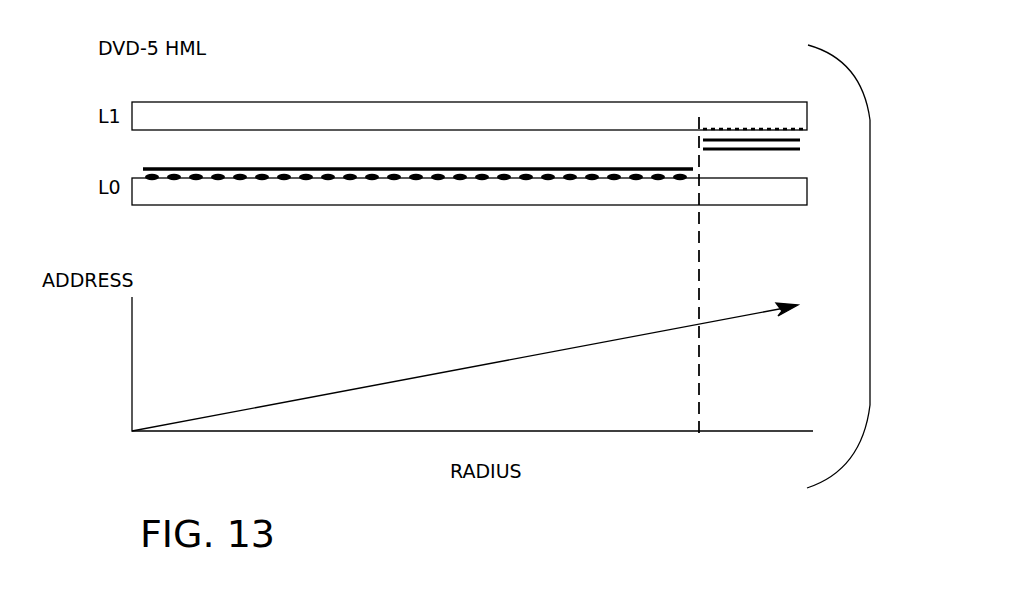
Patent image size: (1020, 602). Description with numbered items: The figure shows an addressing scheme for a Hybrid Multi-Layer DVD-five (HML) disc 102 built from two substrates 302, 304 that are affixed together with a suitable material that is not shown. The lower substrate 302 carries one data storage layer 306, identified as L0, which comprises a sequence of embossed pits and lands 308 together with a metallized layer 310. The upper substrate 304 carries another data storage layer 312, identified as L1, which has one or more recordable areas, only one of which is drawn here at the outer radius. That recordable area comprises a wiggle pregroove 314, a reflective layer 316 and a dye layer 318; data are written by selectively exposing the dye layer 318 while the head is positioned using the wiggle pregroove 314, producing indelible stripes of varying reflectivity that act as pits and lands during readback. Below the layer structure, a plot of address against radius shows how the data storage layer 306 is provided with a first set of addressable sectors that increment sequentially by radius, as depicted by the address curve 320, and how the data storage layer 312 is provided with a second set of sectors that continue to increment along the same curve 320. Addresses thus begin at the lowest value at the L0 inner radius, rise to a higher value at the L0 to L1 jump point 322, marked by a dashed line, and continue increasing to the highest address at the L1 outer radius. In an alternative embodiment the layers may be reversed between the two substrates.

The disc 102 is at (228, 32).
The substrate 302 is at (195, 195).
The substrate 304 is at (195, 115).
The data storage layer 306 is at (185, 155).
The embossed pits and lands 308 is at (470, 181).
The metallized layer 310 is at (502, 168).
The data storage layer 312 is at (712, 72).
The wiggle pregroove 314 is at (752, 128).
The reflective layer 316 is at (725, 141).
The dye layer 318 is at (760, 150).
The address curve 320 is at (553, 349).
The L0 to L1 jump point 322 is at (698, 290).